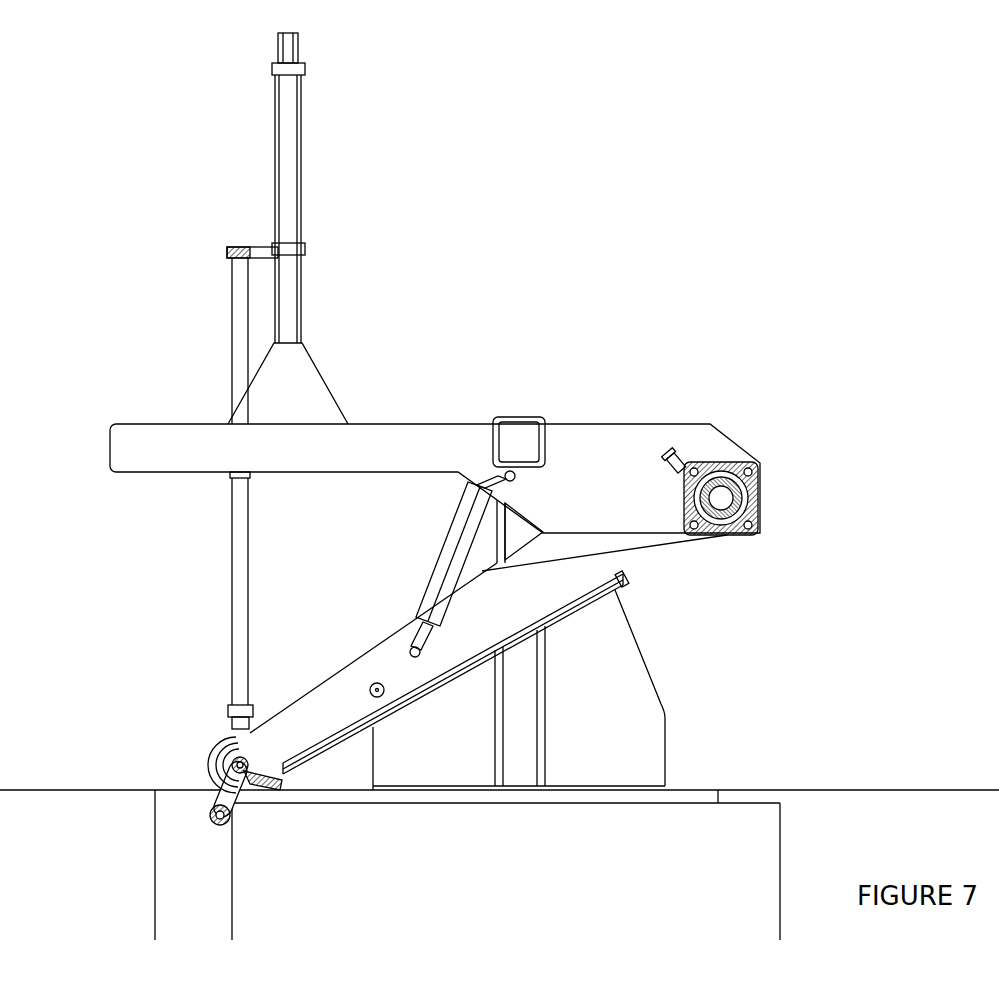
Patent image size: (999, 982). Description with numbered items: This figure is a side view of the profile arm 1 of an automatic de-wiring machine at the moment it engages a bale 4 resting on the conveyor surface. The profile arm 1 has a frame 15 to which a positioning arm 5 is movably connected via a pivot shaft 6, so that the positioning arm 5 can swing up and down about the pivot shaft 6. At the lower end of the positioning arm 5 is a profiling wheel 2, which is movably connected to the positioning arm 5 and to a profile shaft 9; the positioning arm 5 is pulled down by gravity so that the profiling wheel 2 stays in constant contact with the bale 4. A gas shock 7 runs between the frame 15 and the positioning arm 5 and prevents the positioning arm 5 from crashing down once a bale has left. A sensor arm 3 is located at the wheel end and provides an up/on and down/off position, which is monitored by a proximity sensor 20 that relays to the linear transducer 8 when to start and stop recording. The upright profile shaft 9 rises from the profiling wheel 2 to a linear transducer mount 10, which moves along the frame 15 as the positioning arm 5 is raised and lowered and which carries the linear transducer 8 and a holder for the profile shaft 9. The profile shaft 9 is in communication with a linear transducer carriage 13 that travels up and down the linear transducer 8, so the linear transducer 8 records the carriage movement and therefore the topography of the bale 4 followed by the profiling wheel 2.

The profile arm 1 is at (745, 440).
The profiling wheel 2 is at (206, 757).
The sensor arm 3 is at (216, 826).
The bale 4 is at (782, 826).
The positioning arm 5 is at (632, 545).
The pivot shaft 6 is at (762, 498).
The gas shock 7 is at (455, 577).
The linear transducer 8 is at (300, 144).
The profile shaft 9 is at (232, 345).
The linear transducer mount 10 is at (333, 385).
The linear transducer carriage 13 is at (301, 255).
The frame 15 is at (423, 423).
The proximity sensor 20 is at (690, 458).